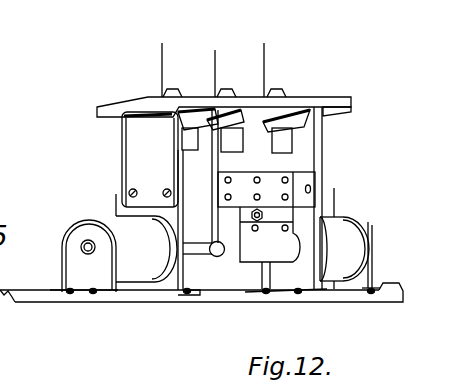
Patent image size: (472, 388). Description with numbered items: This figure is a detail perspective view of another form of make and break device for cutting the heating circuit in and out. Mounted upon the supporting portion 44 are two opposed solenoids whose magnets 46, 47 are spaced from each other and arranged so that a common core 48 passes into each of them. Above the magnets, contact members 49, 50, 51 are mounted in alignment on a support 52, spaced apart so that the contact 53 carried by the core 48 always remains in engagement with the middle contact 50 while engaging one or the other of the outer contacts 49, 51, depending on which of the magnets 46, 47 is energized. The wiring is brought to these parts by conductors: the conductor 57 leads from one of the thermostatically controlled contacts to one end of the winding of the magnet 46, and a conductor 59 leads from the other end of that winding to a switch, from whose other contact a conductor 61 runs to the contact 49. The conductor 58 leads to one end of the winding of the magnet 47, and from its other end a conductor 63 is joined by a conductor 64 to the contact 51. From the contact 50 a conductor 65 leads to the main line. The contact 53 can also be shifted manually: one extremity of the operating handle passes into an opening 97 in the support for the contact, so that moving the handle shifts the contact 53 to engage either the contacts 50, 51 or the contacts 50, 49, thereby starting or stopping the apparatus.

The supporting portion 44 is at (42, 294).
The magnet 46 is at (343, 266).
The magnet 47 is at (135, 262).
The core 48 is at (200, 248).
The contact member 49 is at (197, 115).
The contact member 50 is at (251, 113).
The contact member 51 is at (294, 113).
The support 52 is at (340, 100).
The contact 53 is at (261, 162).
The electrical conductor wire 57 is at (383, 193).
The electrical conductor wire 58 is at (82, 242).
The conductor 59 is at (334, 192).
The conductor 61 is at (162, 72).
The conductor 63 is at (108, 207).
The conductor 64 is at (257, 34).
The conductor 65 is at (215, 50).
The opening 97 is at (253, 223).